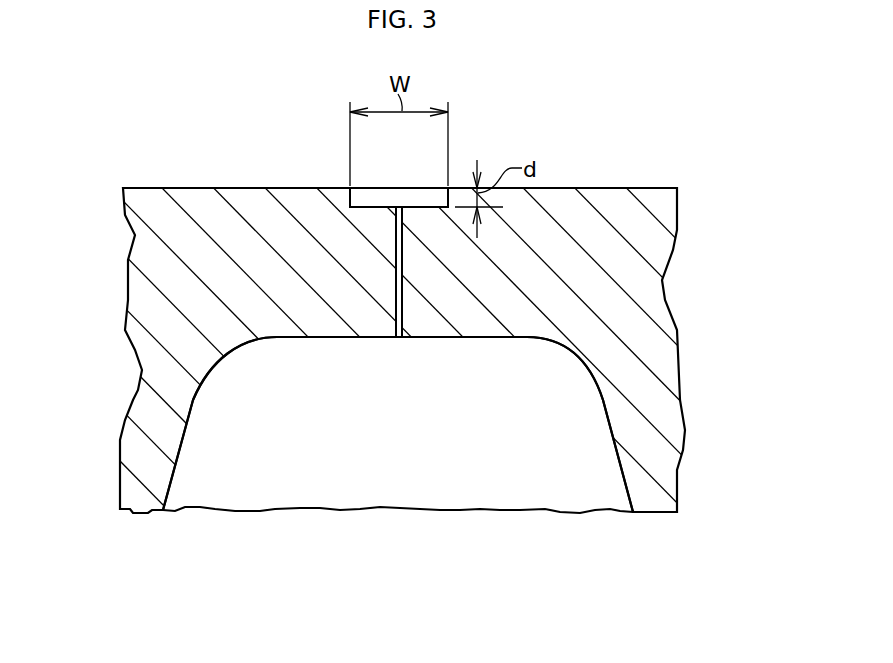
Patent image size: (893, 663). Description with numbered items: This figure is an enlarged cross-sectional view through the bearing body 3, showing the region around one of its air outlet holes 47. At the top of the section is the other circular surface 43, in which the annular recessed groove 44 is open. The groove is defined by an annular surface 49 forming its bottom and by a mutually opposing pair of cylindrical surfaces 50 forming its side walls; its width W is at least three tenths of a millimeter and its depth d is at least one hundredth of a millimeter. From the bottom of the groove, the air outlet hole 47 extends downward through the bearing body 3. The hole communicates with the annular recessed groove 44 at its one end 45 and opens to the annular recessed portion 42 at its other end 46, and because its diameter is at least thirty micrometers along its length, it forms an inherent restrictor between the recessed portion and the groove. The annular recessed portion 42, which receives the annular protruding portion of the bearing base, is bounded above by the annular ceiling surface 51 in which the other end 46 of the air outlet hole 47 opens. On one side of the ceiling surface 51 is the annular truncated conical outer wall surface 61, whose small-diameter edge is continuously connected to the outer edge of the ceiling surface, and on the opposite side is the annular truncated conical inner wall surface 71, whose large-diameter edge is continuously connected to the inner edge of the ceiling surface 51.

The bearing body 3 is at (189, 188).
The annular recessed portion 42 is at (645, 468).
The other circular surface 43 is at (604, 188).
The annular recessed groove 44 is at (379, 199).
The one end of air outlet hole 45 is at (398, 207).
The other end of air outlet hole 46 is at (398, 337).
The air outlet hole 47 is at (395, 275).
The annular surface 49 is at (430, 207).
The cylindrical surfaces 50 is at (352, 192).
The annular ceiling surface 51 is at (310, 338).
The truncated conical outer wall surface 61 is at (643, 485).
The truncated conical inner wall surface 71 is at (160, 455).